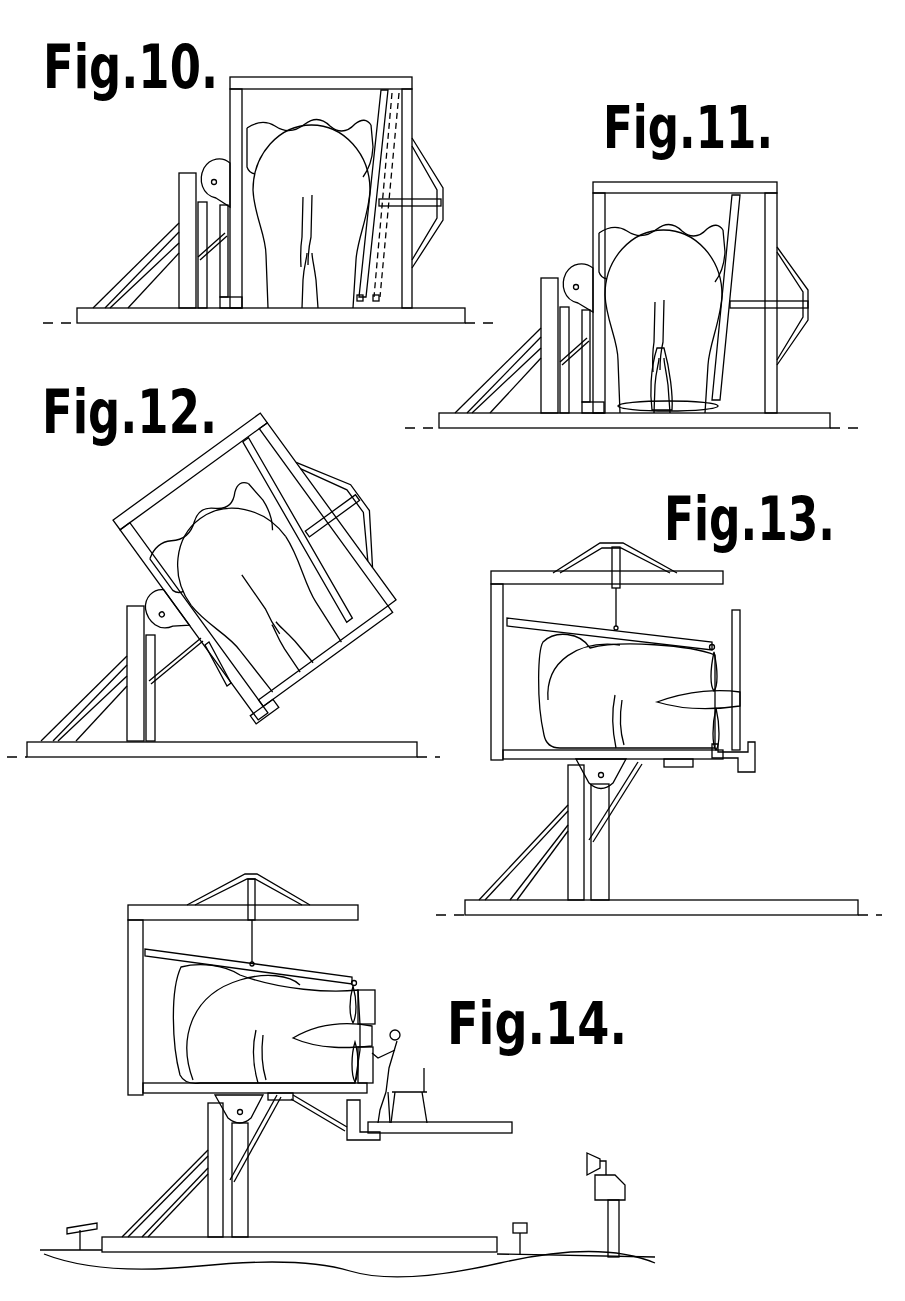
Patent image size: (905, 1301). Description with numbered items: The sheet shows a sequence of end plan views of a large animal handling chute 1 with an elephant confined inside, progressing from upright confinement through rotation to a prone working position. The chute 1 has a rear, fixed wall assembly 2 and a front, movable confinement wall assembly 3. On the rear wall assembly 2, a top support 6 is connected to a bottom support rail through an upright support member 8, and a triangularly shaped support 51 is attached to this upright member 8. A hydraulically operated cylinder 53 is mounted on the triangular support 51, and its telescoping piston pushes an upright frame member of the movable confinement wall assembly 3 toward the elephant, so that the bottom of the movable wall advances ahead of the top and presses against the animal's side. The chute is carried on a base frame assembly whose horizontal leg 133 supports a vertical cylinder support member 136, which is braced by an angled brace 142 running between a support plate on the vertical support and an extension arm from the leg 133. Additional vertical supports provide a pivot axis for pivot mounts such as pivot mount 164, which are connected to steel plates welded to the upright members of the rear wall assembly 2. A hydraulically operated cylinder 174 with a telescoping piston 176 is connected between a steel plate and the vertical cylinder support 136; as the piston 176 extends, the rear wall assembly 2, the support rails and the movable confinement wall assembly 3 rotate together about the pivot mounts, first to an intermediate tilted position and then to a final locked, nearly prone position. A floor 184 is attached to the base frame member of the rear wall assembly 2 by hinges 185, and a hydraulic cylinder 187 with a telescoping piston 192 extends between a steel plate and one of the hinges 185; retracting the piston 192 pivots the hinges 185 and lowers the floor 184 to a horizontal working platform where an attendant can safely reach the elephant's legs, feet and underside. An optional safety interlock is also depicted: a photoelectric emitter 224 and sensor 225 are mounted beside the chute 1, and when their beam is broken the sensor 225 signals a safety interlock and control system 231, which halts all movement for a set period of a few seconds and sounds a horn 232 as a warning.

In FIG. 10, the large animal handling chute 1 is at (357, 14).
In FIG. 10, the rear fixed wall assembly 2 is at (229, 108).
In FIG. 10, the front movable confinement wall assembly 3 is at (397, 117).
In FIG. 10, the top support 6 is at (275, 52).
In FIG. 10, the upright support member 8 is at (410, 295).
In FIG. 10, the triangularly shaped support 51 is at (432, 172).
In FIG. 10, the hydraulically operated cylinder 53 is at (424, 208).
In FIG. 10, the horizontal leg 133 is at (178, 318).
In FIG. 10, the vertical cylinder support member 136 is at (181, 189).
In FIG. 10, the angled brace 142 is at (127, 272).
In FIG. 10, the pivot mount 164 is at (228, 164).
In FIG. 12, the hydraulically operated cylinder 174 is at (180, 676).
In FIG. 13, the hydraulically operated cylinder 174 is at (606, 839).
In FIG. 12, the telescoping piston 176 is at (197, 650).
In FIG. 13, the telescoping piston 176 is at (636, 771).
In FIG. 13, the floor 184 is at (741, 693).
In FIG. 14, the floor 184 is at (490, 1124).
In FIG. 13, the hinge 185 is at (737, 762).
In FIG. 14, the hinge 185 is at (360, 1138).
In FIG. 13, the hydraulic cylinder 187 is at (677, 769).
In FIG. 14, the hydraulic cylinder 187 is at (296, 1101).
In FIG. 14, the telescoping piston 192 is at (330, 1125).
In FIG. 14, the photoelectric emitter 224 is at (78, 1228).
In FIG. 14, the photoelectric sensor 225 is at (528, 1228).
In FIG. 14, the safety interlock and control system 231 is at (625, 1184).
In FIG. 14, the horn 232 is at (598, 1156).